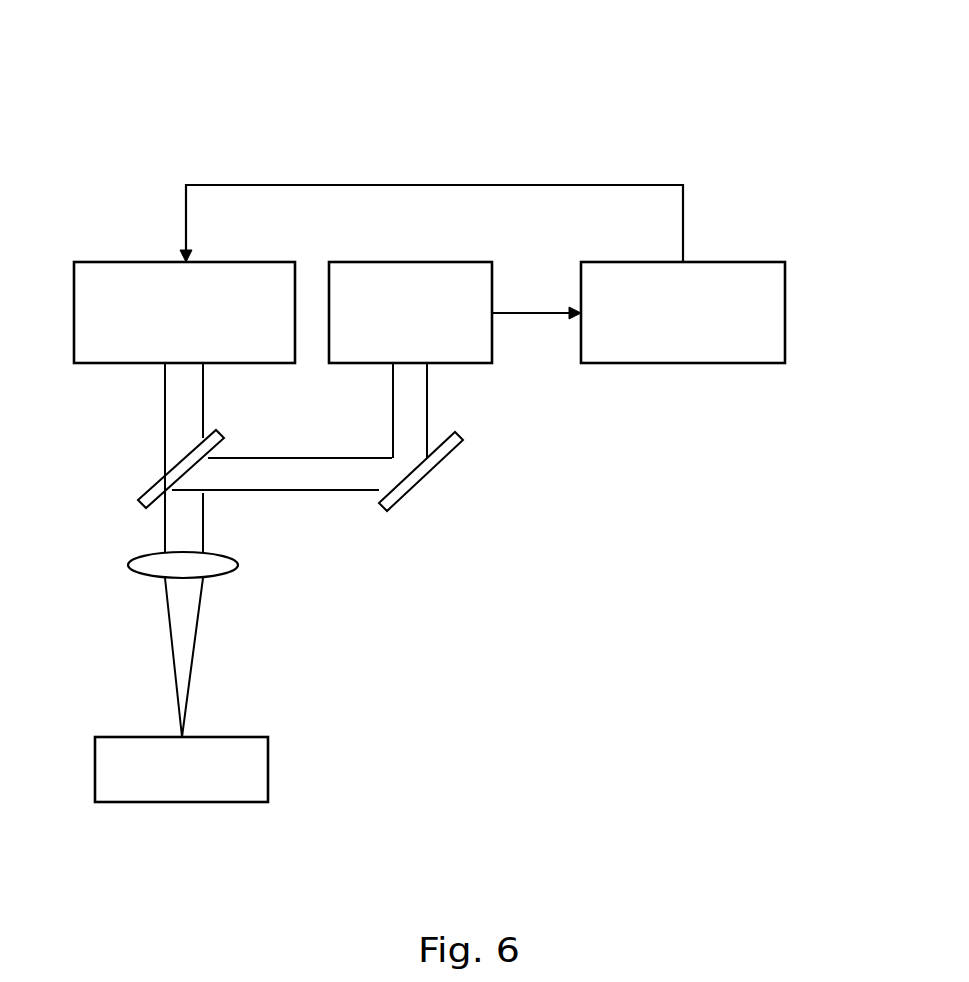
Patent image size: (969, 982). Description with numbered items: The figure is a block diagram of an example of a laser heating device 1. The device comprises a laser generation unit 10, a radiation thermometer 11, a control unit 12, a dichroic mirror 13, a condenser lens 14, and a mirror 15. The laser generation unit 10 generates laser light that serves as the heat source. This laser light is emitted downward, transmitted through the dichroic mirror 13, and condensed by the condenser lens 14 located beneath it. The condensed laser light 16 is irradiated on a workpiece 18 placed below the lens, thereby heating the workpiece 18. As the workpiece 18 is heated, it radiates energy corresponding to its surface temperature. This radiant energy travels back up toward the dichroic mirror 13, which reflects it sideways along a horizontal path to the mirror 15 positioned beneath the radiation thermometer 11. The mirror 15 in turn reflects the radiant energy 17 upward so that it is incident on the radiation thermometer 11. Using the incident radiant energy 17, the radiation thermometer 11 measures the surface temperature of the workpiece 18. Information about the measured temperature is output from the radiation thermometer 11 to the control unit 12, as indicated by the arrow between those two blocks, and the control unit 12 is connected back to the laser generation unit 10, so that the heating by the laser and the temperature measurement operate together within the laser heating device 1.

The laser heating device 1 is at (583, 77).
The laser generation unit 10 is at (132, 262).
The radiation thermometer 11 is at (438, 262).
The control unit 12 is at (725, 262).
The dichroic mirror 13 is at (147, 485).
The condenser lens 14 is at (137, 555).
The mirror 15 is at (462, 433).
The laser light 16 is at (195, 653).
The radiant energy 17 is at (392, 425).
The workpiece 18 is at (268, 767).